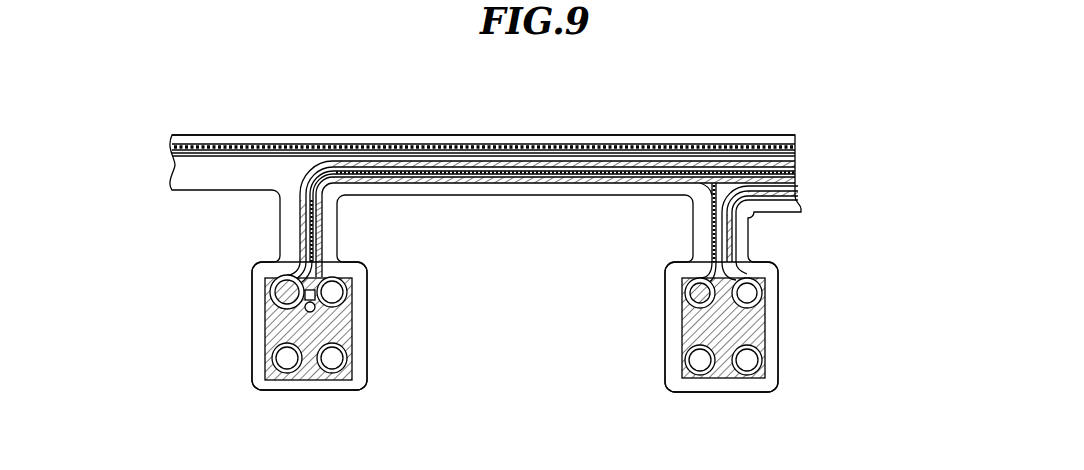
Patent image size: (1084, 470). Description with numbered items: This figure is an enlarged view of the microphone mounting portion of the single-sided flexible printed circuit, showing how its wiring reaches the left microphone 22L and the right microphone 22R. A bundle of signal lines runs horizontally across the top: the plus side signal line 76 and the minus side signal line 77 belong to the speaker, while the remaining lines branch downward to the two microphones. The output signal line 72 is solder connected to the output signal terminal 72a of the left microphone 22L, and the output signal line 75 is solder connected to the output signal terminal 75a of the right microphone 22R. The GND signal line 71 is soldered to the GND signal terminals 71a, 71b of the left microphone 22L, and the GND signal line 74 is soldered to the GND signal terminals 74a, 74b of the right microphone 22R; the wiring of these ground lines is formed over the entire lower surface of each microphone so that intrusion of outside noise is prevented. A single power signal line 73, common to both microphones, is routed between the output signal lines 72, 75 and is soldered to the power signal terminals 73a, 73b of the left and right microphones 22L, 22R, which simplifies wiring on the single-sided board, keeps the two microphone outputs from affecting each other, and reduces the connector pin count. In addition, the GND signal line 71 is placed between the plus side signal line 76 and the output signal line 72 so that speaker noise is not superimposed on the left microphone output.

The minus side signal line 77 is at (403, 140).
The plus side signal line 76 is at (490, 150).
The GND signal line 71 is at (300, 230).
The output signal line 72 is at (323, 232).
The power signal line 73 is at (485, 183).
The GND signal line 74 is at (736, 228).
The output signal line 75 is at (712, 226).
The left microphone 22L is at (367, 268).
The right microphone 22R is at (682, 340).
The output signal terminal 72a is at (287, 290).
The power signal terminal 73a is at (340, 293).
The power signal terminal 73b is at (762, 293).
The GND signal terminal 71a is at (284, 368).
The GND signal terminal 71b is at (336, 368).
The output signal terminal 75a is at (685, 290).
The GND signal terminal 74a is at (700, 372).
The GND signal terminal 74b is at (762, 358).